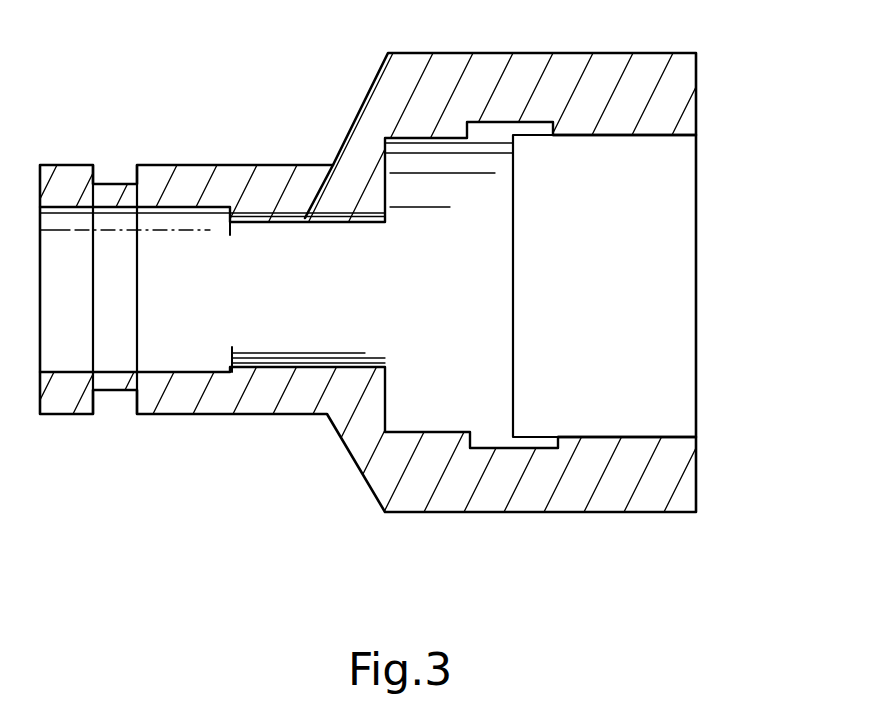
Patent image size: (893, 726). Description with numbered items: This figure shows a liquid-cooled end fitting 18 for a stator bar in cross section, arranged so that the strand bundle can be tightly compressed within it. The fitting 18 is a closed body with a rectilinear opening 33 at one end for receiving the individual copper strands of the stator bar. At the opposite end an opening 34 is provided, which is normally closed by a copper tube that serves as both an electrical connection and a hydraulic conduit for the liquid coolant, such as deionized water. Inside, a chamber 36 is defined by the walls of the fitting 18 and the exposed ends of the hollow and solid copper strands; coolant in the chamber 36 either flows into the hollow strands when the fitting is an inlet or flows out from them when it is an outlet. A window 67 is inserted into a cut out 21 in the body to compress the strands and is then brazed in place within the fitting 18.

The fitting 18 is at (392, 80).
The cut out 21 is at (640, 137).
The rectilinear opening 33 is at (678, 437).
The opening 34 is at (203, 364).
The chamber 36 is at (276, 200).
The window 67 is at (667, 323).